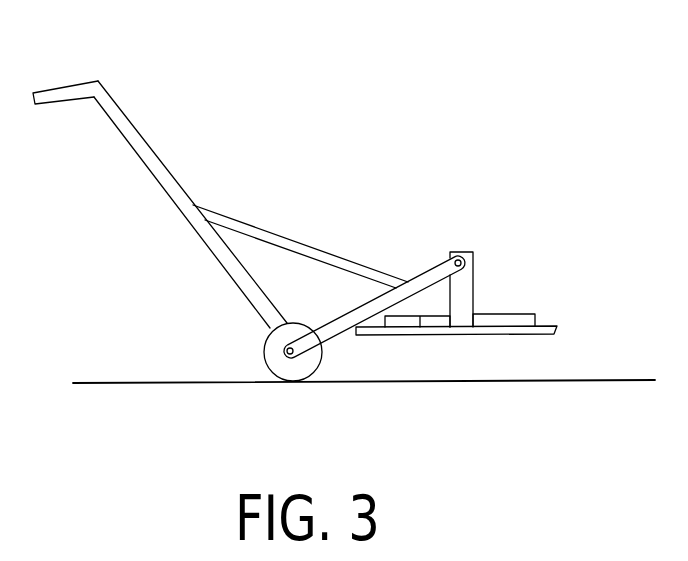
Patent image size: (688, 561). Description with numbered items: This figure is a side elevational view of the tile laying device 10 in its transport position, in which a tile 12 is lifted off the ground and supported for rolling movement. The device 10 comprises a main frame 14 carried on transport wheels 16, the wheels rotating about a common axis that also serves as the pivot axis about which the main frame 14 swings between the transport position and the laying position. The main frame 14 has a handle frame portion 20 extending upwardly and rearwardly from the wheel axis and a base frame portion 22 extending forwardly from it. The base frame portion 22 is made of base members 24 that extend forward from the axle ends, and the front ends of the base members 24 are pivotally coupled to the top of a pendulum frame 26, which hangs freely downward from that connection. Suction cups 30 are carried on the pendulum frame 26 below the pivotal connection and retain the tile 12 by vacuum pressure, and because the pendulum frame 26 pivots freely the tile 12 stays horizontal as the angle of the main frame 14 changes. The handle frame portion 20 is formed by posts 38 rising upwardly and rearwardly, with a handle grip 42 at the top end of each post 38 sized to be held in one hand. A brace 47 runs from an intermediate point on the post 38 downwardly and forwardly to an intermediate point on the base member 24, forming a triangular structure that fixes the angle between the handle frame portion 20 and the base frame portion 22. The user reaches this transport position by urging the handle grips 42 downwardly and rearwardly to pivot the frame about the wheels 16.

The tile laying device 10 is at (307, 96).
The tile 12 is at (557, 326).
The main frame 14 is at (188, 183).
The transport wheel 16 is at (266, 349).
The handle frame portion 20 is at (132, 106).
The base frame portion 22 is at (438, 255).
The base member 24 is at (425, 274).
The pendulum frame 26 is at (466, 291).
The suction cup 30 is at (417, 328).
The post 38 is at (157, 152).
The handle grip 42 is at (55, 92).
The brace 47 is at (291, 237).